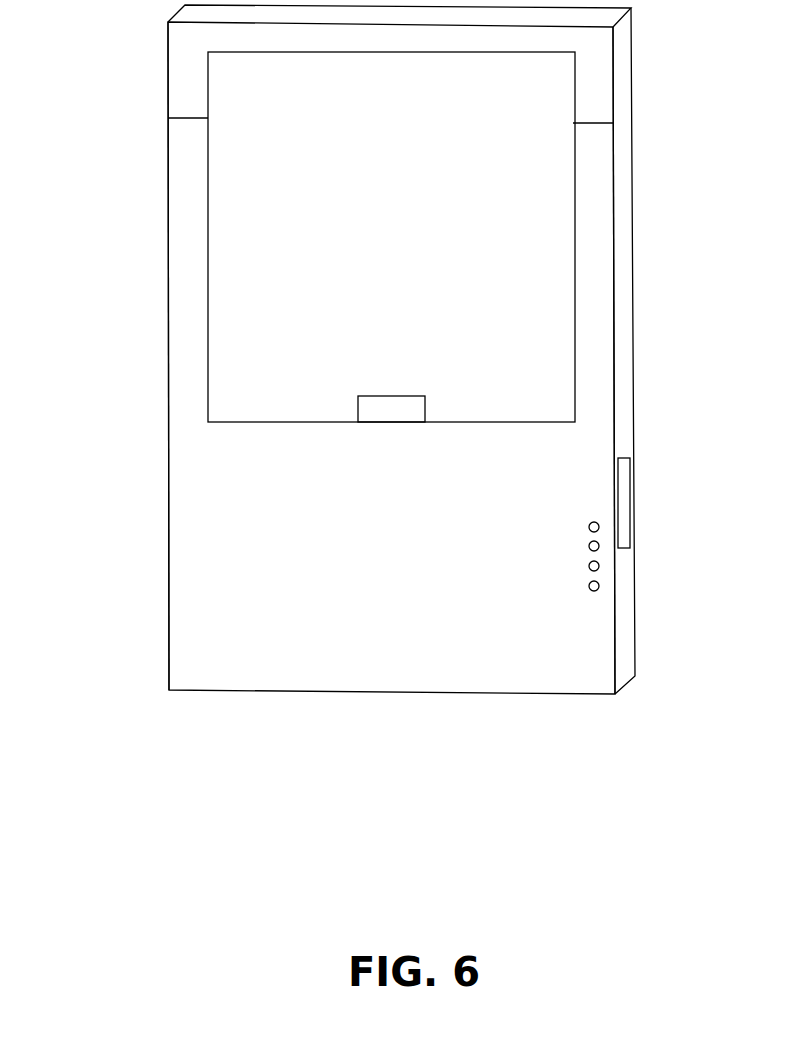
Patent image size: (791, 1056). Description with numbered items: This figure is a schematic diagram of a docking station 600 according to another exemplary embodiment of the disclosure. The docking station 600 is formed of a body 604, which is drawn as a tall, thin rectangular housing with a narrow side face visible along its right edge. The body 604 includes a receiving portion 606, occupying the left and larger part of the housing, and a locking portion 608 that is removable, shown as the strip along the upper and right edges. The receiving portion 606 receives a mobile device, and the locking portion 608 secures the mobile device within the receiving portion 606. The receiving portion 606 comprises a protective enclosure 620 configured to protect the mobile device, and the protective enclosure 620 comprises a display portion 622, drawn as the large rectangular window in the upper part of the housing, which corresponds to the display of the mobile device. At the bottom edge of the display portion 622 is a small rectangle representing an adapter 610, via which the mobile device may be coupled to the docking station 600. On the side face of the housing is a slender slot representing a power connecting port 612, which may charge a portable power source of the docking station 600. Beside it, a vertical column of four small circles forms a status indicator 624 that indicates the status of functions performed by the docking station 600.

The docking station 600 is at (91, 43).
The body 604 is at (543, 695).
The receiving portion 606 is at (169, 312).
The locking portion 608 is at (611, 84).
The adapter 610 is at (414, 401).
The power connecting port 612 is at (627, 524).
The protective enclosure 620 is at (592, 268).
The display portion 622 is at (401, 218).
The status indicator 624 is at (589, 556).